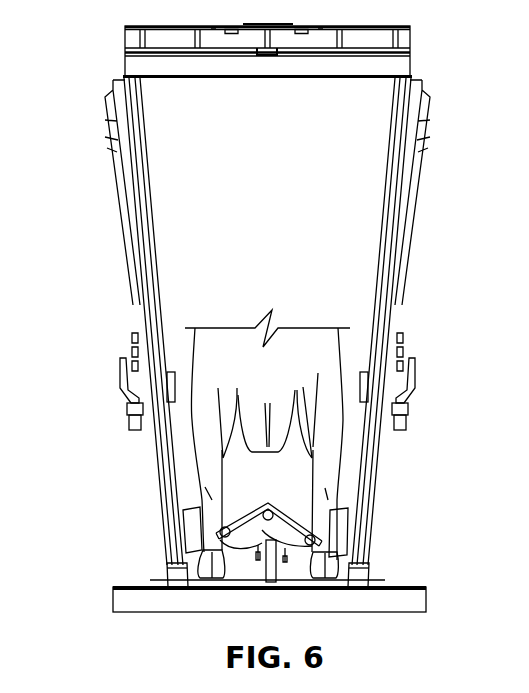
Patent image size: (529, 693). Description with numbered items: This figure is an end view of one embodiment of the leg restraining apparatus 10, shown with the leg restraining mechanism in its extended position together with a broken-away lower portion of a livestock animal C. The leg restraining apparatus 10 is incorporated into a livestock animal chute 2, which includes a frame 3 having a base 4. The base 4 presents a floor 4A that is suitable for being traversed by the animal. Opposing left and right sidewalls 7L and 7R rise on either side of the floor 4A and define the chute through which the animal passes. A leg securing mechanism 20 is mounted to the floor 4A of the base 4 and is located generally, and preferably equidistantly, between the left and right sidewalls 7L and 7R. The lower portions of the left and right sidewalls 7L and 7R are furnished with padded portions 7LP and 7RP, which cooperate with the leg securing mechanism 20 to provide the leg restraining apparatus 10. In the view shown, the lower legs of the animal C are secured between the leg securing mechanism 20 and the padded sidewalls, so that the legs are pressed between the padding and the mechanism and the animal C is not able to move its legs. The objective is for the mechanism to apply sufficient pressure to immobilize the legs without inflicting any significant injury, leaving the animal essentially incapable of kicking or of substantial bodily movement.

The livestock animal chute 2 is at (98, 175).
The frame 3 is at (430, 56).
The base 4 is at (400, 603).
The floor 4A is at (243, 574).
The left sidewall 7L is at (176, 398).
The right sidewall 7R is at (360, 398).
The padded portion 7LP is at (196, 532).
The padded portion 7RP is at (340, 541).
The leg restraining apparatus 10 is at (360, 245).
The leg securing mechanism 20 is at (242, 498).
The animal C is at (325, 367).